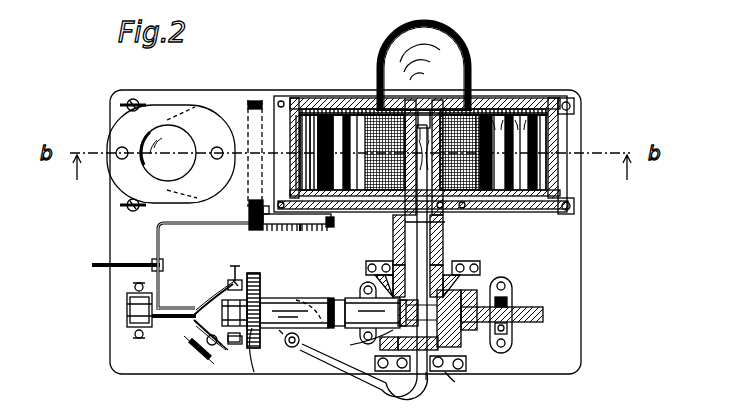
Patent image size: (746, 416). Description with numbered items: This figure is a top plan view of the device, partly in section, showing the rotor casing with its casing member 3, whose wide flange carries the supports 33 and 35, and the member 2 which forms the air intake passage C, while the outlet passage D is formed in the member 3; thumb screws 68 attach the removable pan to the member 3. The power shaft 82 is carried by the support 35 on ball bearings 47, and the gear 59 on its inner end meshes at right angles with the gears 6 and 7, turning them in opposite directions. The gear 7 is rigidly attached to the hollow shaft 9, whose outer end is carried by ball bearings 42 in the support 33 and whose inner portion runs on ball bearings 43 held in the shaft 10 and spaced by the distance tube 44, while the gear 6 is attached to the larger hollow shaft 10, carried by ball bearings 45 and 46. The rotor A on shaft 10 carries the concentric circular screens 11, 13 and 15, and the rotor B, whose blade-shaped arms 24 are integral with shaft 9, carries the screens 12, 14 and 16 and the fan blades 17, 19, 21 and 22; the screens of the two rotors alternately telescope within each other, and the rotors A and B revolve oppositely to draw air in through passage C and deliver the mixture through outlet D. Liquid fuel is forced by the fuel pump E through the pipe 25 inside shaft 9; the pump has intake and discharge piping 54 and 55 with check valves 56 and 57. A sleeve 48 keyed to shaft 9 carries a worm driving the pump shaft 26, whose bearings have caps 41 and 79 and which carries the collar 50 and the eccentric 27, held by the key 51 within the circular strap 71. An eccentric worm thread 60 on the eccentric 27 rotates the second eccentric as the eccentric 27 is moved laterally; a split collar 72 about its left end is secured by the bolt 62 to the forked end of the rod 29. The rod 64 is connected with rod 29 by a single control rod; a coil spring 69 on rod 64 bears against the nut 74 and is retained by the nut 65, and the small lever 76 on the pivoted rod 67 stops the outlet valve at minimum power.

The member 2 is at (452, 58).
The casing member 3 is at (262, 100).
The gear 6 is at (462, 298).
The gear 7 is at (462, 360).
The hollow shaft 9 is at (410, 240).
The hollow shaft 10 is at (393, 252).
The circular screen 11 is at (476, 118).
The circular screen 12 is at (494, 122).
The circular screen 13 is at (506, 125).
The circular screen 14 is at (520, 124).
The circular screen 15 is at (540, 120).
The circular screen 16 is at (553, 116).
The fan blade 17 is at (357, 118).
The fan blade 19 is at (336, 120).
The fan blade 21 is at (312, 115).
The fan blade 22 is at (300, 112).
The arm 24 is at (328, 113).
The pipe 25 is at (380, 385).
The shaft 26 is at (182, 305).
The eccentric 27 is at (262, 300).
The rod 29 is at (190, 322).
The support 33 is at (429, 374).
The support 35 is at (513, 288).
The cap 41 is at (126, 316).
The ball bearings 42 is at (450, 372).
The ball bearings 43 is at (405, 224).
The distance tube 44 is at (366, 268).
The ball bearings 45 is at (474, 263).
The ball bearings 46 is at (446, 228).
The ball bearings 47 is at (512, 332).
The sleeve 48 is at (380, 345).
The collar 50 is at (338, 300).
The key 51 is at (224, 299).
The piping 54 is at (196, 360).
The piping 55 is at (270, 368).
The check valve 56 is at (213, 346).
The check valve 57 is at (298, 350).
The gear 59 is at (480, 282).
The eccentric worm thread 60 is at (298, 298).
The bolt 62 is at (233, 274).
The rod 64 is at (156, 239).
The nut 65 is at (332, 227).
The pivoted rod 67 is at (262, 126).
The thumb screws 68 is at (128, 104).
The coil spring 69 is at (302, 231).
The circular strap 71 is at (257, 277).
The split collar 72 is at (236, 345).
The nut 74 is at (266, 231).
The small lever 76 is at (249, 210).
The cap 79 is at (360, 330).
The power shaft 82 is at (543, 318).
The rotor A is at (485, 212).
The rotor B is at (440, 112).
The air intake passage C is at (424, 66).
The outlet passage D is at (171, 154).
The fuel pump E is at (263, 360).